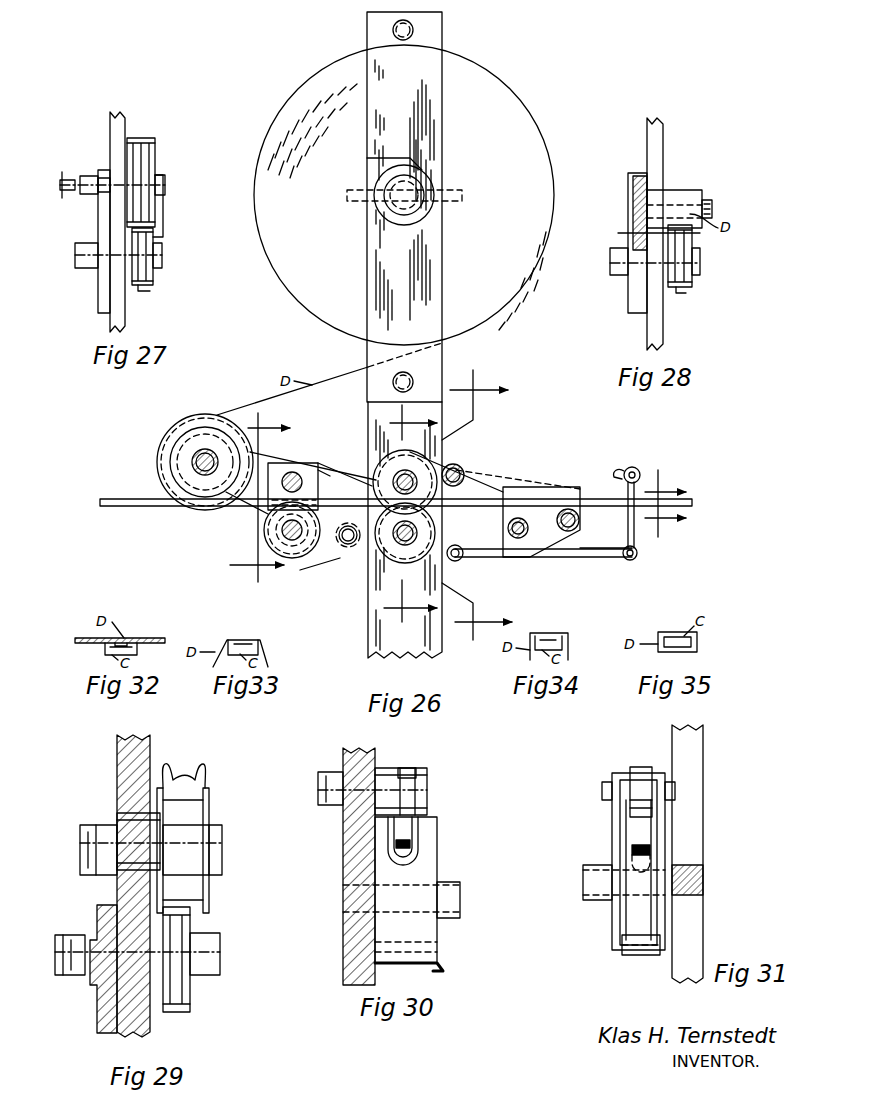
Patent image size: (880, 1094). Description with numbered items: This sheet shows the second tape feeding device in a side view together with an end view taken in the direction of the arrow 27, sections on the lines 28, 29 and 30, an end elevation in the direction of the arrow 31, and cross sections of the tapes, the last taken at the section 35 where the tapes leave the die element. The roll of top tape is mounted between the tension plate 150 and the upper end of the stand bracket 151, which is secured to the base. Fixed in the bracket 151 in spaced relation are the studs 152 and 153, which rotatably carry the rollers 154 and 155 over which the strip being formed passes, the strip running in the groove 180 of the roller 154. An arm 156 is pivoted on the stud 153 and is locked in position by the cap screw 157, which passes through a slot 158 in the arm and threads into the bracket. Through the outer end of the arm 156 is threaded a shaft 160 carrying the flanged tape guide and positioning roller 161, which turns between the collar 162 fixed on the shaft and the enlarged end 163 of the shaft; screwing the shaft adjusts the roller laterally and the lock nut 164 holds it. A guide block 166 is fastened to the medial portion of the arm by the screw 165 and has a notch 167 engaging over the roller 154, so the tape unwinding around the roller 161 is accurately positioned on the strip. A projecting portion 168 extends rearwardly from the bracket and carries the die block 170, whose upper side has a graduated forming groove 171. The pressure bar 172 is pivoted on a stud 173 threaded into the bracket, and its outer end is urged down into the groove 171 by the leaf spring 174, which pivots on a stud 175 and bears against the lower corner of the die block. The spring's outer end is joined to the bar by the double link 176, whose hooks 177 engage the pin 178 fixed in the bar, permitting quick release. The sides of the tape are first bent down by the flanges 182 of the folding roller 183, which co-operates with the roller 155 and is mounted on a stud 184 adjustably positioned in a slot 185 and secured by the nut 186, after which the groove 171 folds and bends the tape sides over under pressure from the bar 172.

In FIG. 26, the arrow 27 is at (128, 463).
In FIG. 26, the section line 28— 28 is at (260, 497).
In FIG. 26, the section line 29— 29 is at (410, 512).
In FIG. 26, the section line 30— 30 is at (477, 505).
In FIG. 26, the arrow 31 is at (708, 505).
In FIG. 26, the section line 35 is at (664, 504).
In FIG. 26, the tension plate 150 is at (378, 40).
In FIG. 26, the stand bracket 151 is at (368, 655).
In FIG. 27, the stand bracket 151 is at (118, 124).
In FIG. 28, the stand bracket 151 is at (658, 135).
In FIG. 29, the stand bracket 151 is at (122, 764).
In FIG. 26, the stud 152 is at (282, 525).
In FIG. 27, the stud 152 is at (160, 254).
In FIG. 28, the stud 152 is at (698, 258).
In FIG. 26, the stud 153 is at (400, 542).
In FIG. 29, the stud 153 is at (212, 951).
In FIG. 26, the roller 154 is at (270, 540).
In FIG. 27, the roller 154 is at (156, 276).
In FIG. 28, the roller 154 is at (696, 276).
In FIG. 26, the roller 155 is at (405, 556).
In FIG. 29, the roller 155 is at (186, 1002).
In FIG. 26, the arm 156 is at (268, 466).
In FIG. 27, the arm 156 is at (98, 293).
In FIG. 28, the arm 156 is at (640, 293).
In FIG. 29, the arm 156 is at (104, 1005).
In FIG. 26, the cap screw 157 is at (345, 541).
In FIG. 26, the slot 158 is at (388, 543).
In FIG. 26, the shaft 160 is at (197, 454).
In FIG. 27, the shaft 160 is at (60, 184).
In FIG. 26, the flanged tape guide and positioning roller 161 is at (164, 450).
In FIG. 27, the flanged tape guide and positioning roller 161 is at (152, 155).
In FIG. 27, the collar 162 is at (112, 179).
In FIG. 27, the enlarged end 163 is at (166, 182).
In FIG. 27, the lock nut 164 is at (88, 196).
In FIG. 26, the screw 165 is at (302, 476).
In FIG. 28, the screw 165 is at (714, 210).
In FIG. 26, the guide block 166 is at (320, 482).
In FIG. 27, the guide block 166 is at (164, 218).
In FIG. 28, the guide block 166 is at (660, 200).
In FIG. 28, the notch 167 is at (758, 235).
In FIG. 26, the projecting portion 168 is at (500, 560).
In FIG. 30, the projecting portion 168 is at (350, 862).
In FIG. 31, the projecting portion 168 is at (690, 912).
In FIG. 26, the die block 170 is at (578, 517).
In FIG. 30, the die block 170 is at (438, 851).
In FIG. 30, the graduated forming groove 171 is at (420, 826).
In FIG. 31, the graduated forming groove 171 is at (632, 850).
In FIG. 26, the pressure bar 172 is at (540, 470).
In FIG. 30, the pressure bar 172 is at (405, 768).
In FIG. 31, the pressure bar 172 is at (640, 770).
In FIG. 26, the stud 173 is at (485, 470).
In FIG. 30, the stud 173 is at (420, 785).
In FIG. 26, the leaf spring 174 is at (590, 556).
In FIG. 30, the leaf spring 174 is at (425, 972).
In FIG. 31, the leaf spring 174 is at (634, 956).
In FIG. 26, the stud 175 is at (462, 560).
In FIG. 30, the stud 175 is at (438, 955).
In FIG. 26, the double link 176 is at (634, 538).
In FIG. 31, the double link 176 is at (618, 836).
In FIG. 26, the hooks 177 is at (624, 470).
In FIG. 26, the pin 178 is at (636, 470).
In FIG. 31, the pin 178 is at (602, 790).
In FIG. 27, the groove 180 is at (142, 288).
In FIG. 28, the groove 180 is at (684, 290).
In FIG. 29, the flanges 182 is at (206, 775).
In FIG. 26, the folding roller 183 is at (392, 452).
In FIG. 29, the folding roller 183 is at (210, 810).
In FIG. 26, the stud 184 is at (398, 476).
In FIG. 29, the stud 184 is at (212, 848).
In FIG. 26, the slot 185 is at (455, 466).
In FIG. 29, the slot 185 is at (128, 812).
In FIG. 29, the nut 186 is at (86, 838).